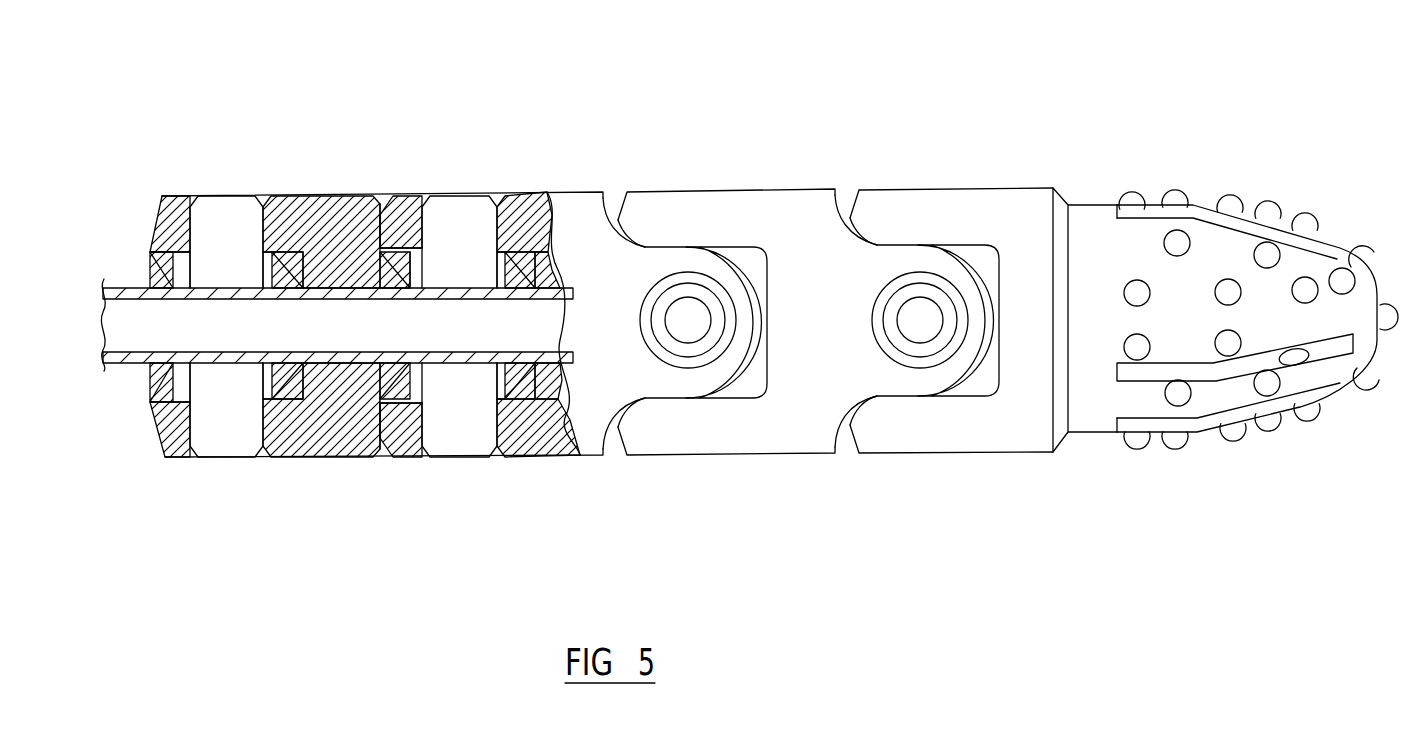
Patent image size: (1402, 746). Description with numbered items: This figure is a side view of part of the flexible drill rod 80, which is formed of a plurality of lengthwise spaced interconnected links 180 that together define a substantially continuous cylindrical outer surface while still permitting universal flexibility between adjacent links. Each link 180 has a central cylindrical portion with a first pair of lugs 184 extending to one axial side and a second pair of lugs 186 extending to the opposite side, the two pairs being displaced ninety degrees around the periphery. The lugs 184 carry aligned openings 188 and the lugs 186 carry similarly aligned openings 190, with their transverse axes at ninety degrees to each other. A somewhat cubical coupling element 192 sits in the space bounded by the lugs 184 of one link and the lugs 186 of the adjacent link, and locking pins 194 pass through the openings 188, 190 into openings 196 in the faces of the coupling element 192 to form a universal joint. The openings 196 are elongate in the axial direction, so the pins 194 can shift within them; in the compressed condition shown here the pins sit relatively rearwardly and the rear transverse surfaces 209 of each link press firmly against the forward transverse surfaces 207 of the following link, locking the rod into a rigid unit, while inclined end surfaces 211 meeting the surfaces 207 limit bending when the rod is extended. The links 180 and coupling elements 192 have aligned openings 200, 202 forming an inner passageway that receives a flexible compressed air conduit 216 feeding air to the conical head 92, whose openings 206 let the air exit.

The flexible drill rod 80 is at (997, 150).
The head 92 is at (1104, 194).
The link 180 is at (432, 175).
The lugs 184 is at (873, 365).
The lugs 186 is at (740, 200).
The openings 188 is at (718, 287).
The openings 190 is at (503, 232).
The coupling element 192 is at (285, 232).
The locking pins 194 is at (222, 214).
The openings 196 is at (180, 276).
The openings 200 is at (338, 430).
The openings 202 is at (298, 400).
The openings 206 is at (1290, 358).
The forward transverse surfaces 207 is at (382, 217).
The rear transverse surfaces 209 is at (385, 378).
The inclined end surfaces 211 is at (383, 403).
The flexible compressed air conduit 216 is at (128, 322).